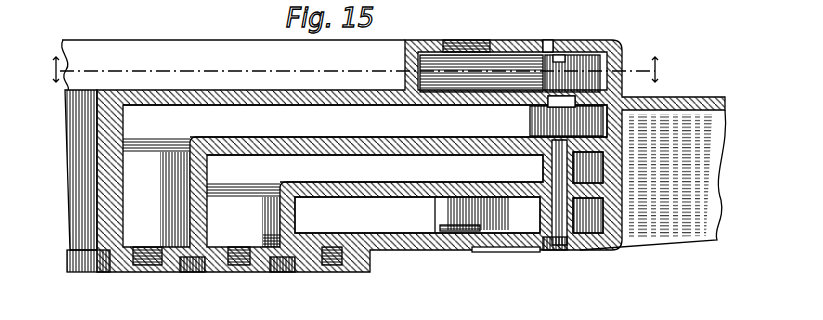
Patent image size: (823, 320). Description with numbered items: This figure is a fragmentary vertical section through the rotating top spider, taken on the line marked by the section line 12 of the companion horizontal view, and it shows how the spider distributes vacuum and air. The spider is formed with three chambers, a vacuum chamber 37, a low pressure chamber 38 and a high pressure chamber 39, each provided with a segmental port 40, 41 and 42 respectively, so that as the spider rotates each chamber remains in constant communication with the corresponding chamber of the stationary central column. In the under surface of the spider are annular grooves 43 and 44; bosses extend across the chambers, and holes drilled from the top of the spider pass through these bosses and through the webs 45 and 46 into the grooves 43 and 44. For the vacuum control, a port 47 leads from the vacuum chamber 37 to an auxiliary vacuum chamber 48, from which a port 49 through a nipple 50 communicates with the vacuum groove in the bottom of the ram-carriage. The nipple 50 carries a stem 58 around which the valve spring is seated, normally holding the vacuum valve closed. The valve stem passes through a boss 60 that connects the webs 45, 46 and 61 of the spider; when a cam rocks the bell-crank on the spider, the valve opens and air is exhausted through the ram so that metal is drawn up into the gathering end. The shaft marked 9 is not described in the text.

The shaft 9 is at (189, 36).
The section line 12— 12 is at (355, 72).
The vacuum chamber 37 is at (365, 122).
The low pressure chamber 38 is at (375, 169).
The high pressure chamber 39 is at (417, 215).
The segmental port 40 is at (148, 249).
The segmental port 41 is at (240, 249).
The segmental port 42 is at (335, 267).
The annular groove 43 is at (188, 272).
The annular groove 44 is at (282, 272).
The web 45 is at (497, 148).
The web 46 is at (503, 195).
The port 47 is at (563, 99).
The auxiliary vacuum chamber 48 is at (496, 60).
The port 49 is at (575, 50).
The nipple 50 is at (540, 48).
The stem 58 is at (558, 50).
The boss 60 is at (565, 250).
The web 61 is at (487, 250).